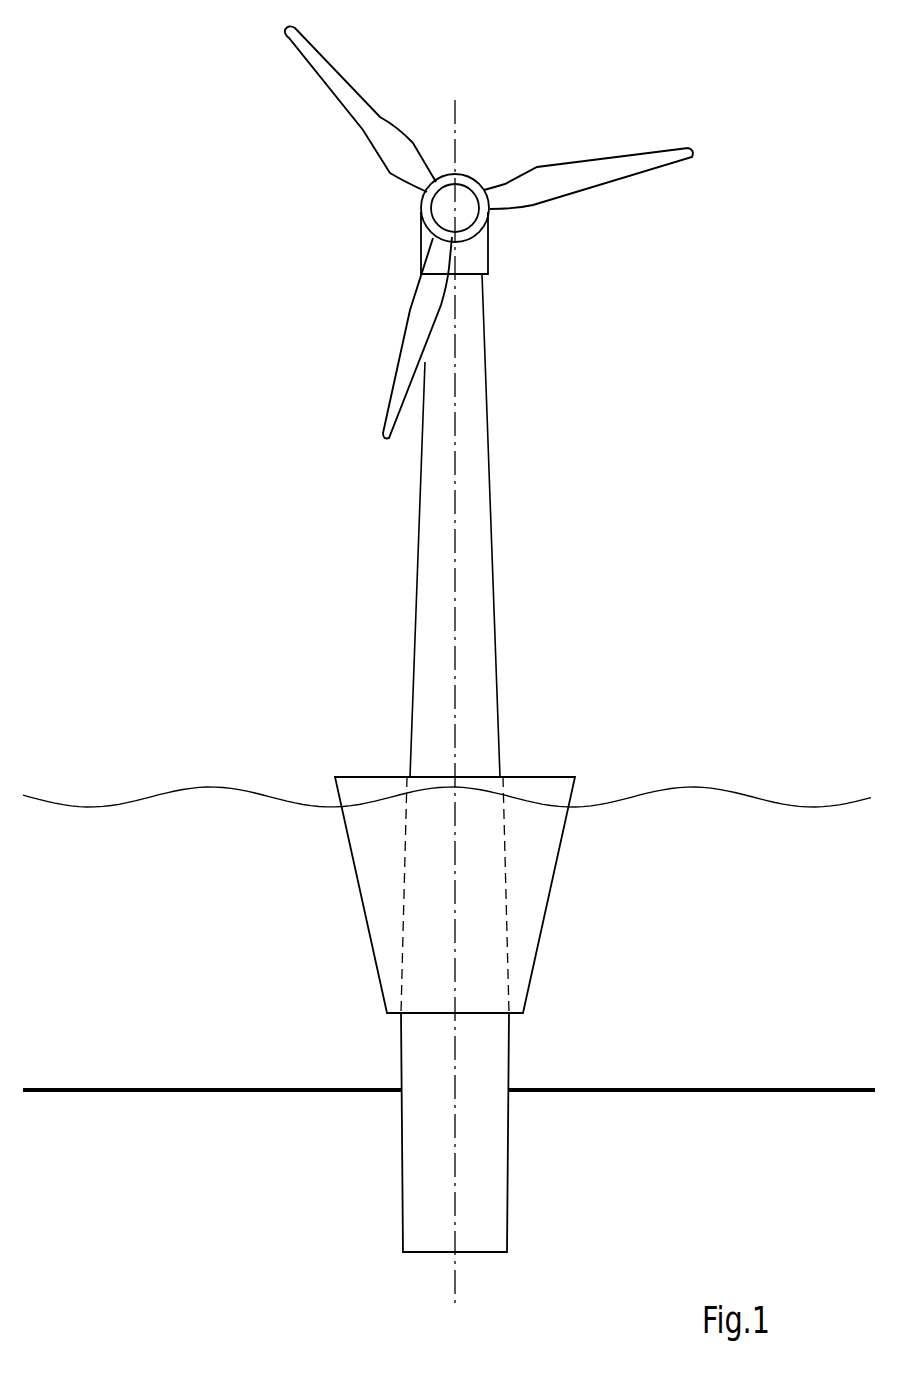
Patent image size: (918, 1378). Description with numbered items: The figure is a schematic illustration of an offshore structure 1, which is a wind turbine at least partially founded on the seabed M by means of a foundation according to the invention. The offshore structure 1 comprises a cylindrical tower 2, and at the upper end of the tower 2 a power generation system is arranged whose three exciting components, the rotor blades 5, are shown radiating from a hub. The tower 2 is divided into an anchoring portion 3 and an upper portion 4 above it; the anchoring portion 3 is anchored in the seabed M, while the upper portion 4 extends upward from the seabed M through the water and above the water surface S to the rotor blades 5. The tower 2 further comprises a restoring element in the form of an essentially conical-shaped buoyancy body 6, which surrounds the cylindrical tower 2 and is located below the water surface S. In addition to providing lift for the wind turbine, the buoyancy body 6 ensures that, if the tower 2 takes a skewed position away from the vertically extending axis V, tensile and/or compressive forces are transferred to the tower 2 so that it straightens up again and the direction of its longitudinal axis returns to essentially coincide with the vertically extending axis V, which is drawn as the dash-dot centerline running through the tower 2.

The offshore structure 1 is at (646, 68).
The tower 2 is at (477, 603).
The anchoring portion 3 is at (380, 1252).
The upper portion 4 is at (380, 170).
The rotor blades 5 is at (350, 100).
The buoyancy body 6 is at (537, 876).
The vertically extending axis V is at (457, 125).
The water surface S is at (155, 798).
The seabed M is at (730, 1087).